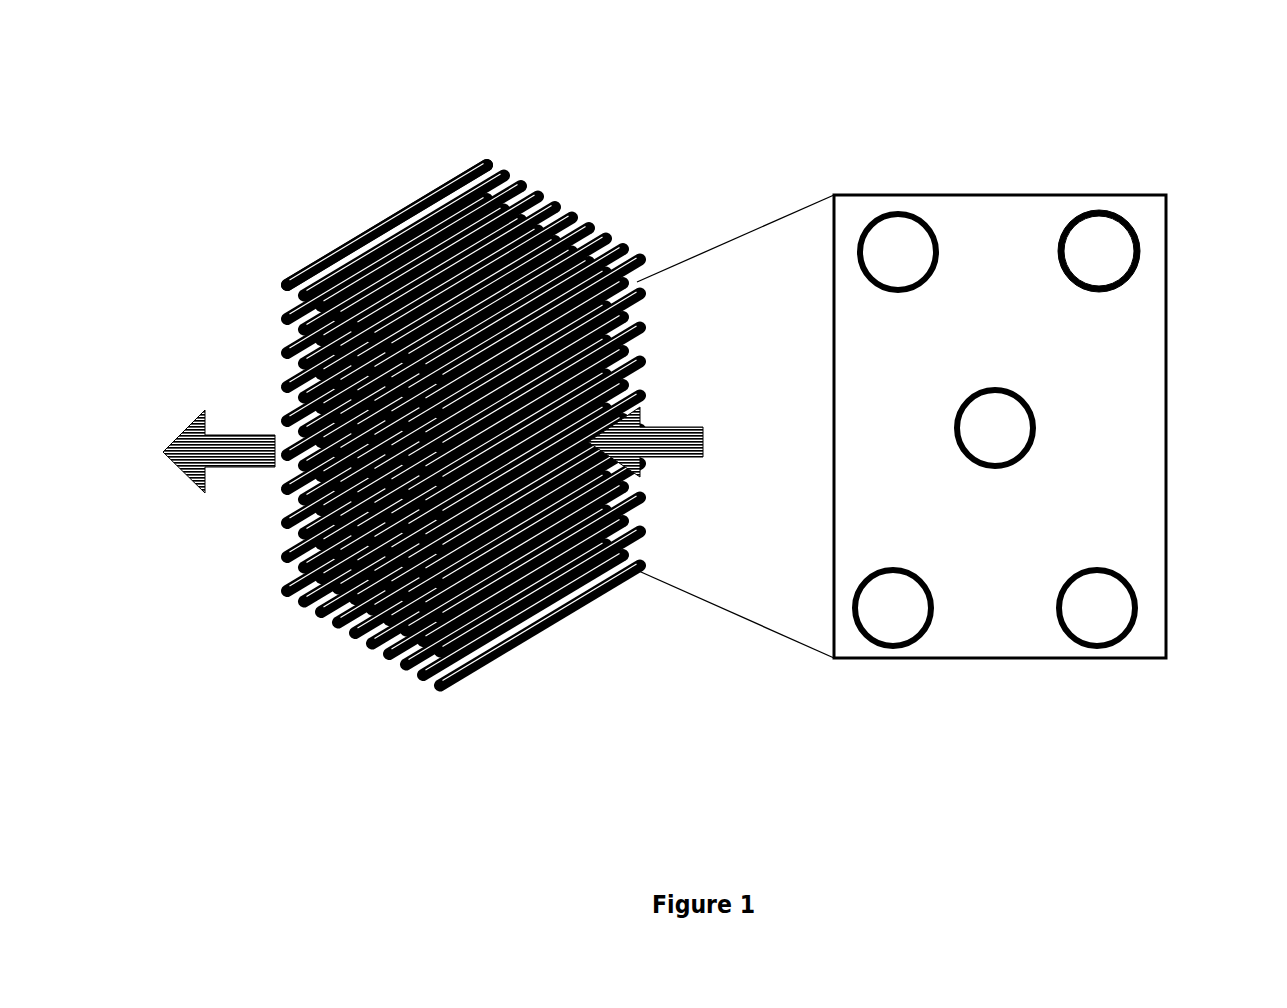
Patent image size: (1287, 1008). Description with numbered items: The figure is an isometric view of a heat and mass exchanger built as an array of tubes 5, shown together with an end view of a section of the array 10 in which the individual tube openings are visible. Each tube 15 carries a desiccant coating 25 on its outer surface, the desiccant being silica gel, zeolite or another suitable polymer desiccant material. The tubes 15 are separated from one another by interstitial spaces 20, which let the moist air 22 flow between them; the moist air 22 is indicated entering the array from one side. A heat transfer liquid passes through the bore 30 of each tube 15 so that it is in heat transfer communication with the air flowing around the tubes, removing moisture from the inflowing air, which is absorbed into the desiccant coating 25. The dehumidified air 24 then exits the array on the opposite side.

The array of tubes 5 is at (667, 432).
The tube bundle 10 is at (667, 344).
The tube 15 is at (355, 218).
The interstitial spaces 20 is at (290, 287).
The moist air 22 is at (666, 442).
The dehumidified air 24 is at (198, 451).
The desiccant coating 25 is at (1149, 228).
The bore 30 is at (1106, 249).